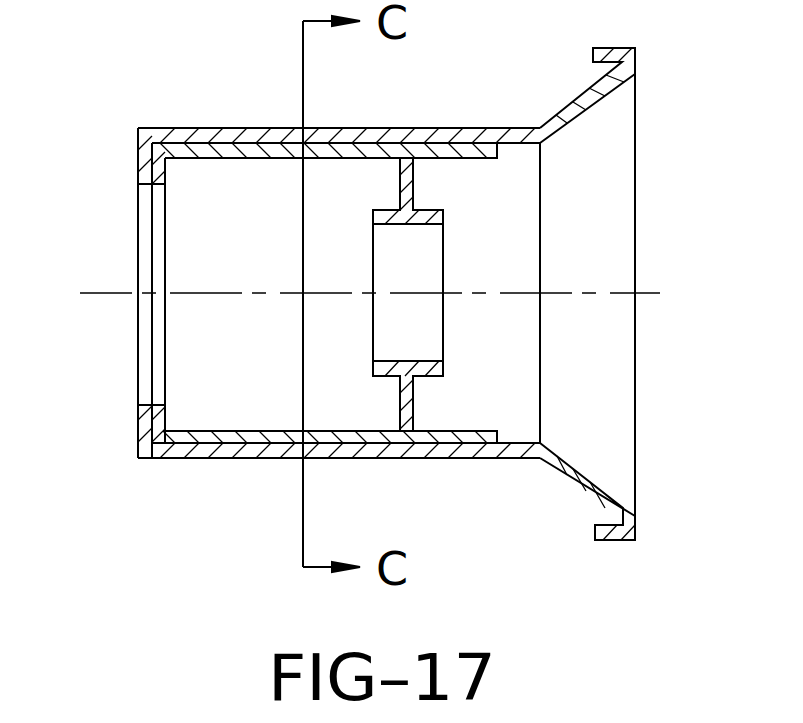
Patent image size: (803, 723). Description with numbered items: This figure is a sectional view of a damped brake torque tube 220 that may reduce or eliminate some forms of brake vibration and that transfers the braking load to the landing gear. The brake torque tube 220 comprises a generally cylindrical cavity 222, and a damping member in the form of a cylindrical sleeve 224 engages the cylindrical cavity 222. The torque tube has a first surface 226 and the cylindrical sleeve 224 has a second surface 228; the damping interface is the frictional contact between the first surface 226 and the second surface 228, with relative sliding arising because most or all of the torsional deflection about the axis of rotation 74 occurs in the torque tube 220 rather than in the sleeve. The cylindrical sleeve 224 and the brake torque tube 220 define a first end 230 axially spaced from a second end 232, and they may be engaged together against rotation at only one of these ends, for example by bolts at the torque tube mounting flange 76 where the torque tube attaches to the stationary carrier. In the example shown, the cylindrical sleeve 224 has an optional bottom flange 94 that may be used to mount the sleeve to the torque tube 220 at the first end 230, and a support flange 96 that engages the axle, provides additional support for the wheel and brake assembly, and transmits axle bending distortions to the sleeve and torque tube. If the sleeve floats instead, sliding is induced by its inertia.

The axis of rotation 74 is at (110, 293).
The torque tube mounting flange 76 is at (138, 170).
The bottom flange 94 is at (160, 420).
The support flange 96 is at (407, 408).
The brake torque tube 220 is at (232, 126).
The cylindrical cavity 222 is at (527, 145).
The cylindrical sleeve 224 is at (222, 158).
The first surface 226 is at (288, 158).
The second surface 228 is at (403, 138).
The first end 230 is at (237, 473).
The second end 232 is at (652, 555).